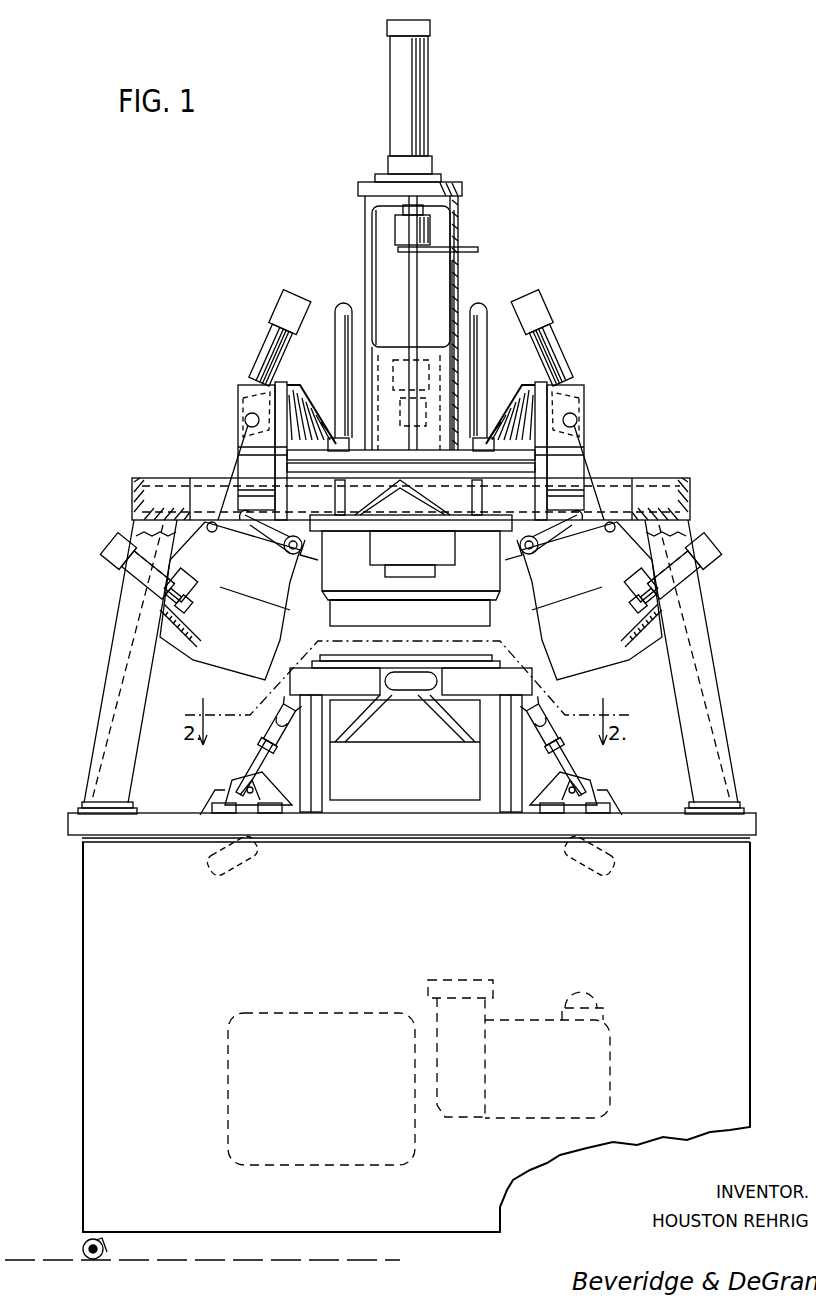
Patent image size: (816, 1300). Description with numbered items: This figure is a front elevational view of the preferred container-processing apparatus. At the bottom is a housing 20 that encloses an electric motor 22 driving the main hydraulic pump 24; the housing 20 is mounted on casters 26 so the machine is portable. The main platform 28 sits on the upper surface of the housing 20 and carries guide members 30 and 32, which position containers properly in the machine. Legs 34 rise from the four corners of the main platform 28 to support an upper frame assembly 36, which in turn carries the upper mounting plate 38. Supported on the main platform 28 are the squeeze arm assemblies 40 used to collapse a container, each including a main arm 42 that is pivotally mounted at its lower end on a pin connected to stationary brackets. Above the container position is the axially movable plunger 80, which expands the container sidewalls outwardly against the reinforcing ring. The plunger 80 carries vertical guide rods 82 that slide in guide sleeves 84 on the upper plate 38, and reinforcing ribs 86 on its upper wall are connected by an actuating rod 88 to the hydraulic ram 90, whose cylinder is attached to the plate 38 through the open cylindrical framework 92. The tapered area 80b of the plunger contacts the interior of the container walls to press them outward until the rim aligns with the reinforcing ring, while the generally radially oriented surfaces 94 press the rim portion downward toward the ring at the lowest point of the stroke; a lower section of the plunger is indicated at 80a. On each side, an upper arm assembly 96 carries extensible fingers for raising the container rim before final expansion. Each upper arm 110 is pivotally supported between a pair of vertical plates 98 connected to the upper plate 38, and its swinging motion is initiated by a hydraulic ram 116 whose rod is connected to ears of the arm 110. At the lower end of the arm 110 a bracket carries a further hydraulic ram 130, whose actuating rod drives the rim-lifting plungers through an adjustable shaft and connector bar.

The housing 20 is at (318, 965).
The electric motor 22 is at (360, 1030).
The main hydraulic pump 24 is at (592, 1060).
The casters 26 is at (100, 1255).
The main platform 28 is at (668, 832).
The guide member 30 is at (313, 812).
The guide member 32 is at (512, 812).
The legs 34 is at (116, 670).
The upper frame assembly 36 is at (634, 470).
The upper mounting plate 38 is at (388, 466).
The squeeze arm assemblies 40 is at (263, 754).
The main arm 42 is at (300, 793).
The plunger 80 is at (487, 563).
The lower head section 80a is at (484, 605).
The tapered area 80b is at (485, 588).
The vertical guide rods 82 is at (337, 348).
The guide sleeves 84 is at (338, 440).
The reinforcing ribs 86 is at (430, 482).
The actuating rod 88 is at (412, 285).
The hydraulic ram 90 is at (410, 118).
The open cylindrical framework 92 is at (456, 216).
The radially oriented surfaces 94 is at (400, 482).
The upper arm assembly 96 is at (214, 679).
The vertical plates 98 is at (241, 400).
The upper arm 110 is at (230, 566).
The hydraulic ram 116 is at (272, 353).
The hydraulic ram 130 is at (108, 566).